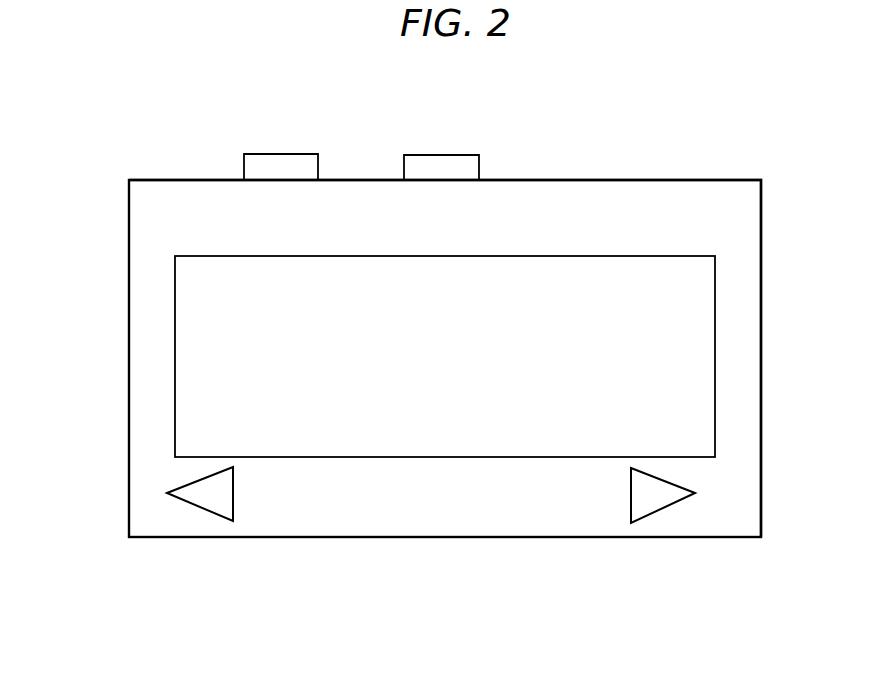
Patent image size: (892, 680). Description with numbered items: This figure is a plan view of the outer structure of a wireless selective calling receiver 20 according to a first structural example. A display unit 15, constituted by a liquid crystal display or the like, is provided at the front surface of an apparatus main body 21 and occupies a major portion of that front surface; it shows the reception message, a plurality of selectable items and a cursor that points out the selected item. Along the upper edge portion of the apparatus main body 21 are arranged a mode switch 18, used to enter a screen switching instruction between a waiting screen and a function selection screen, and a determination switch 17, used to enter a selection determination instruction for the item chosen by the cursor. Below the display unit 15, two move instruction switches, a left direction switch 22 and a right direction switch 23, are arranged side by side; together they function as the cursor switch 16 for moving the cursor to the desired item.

The display unit 15 is at (175, 357).
The cursor switch 16 is at (360, 601).
The determination switch 17 is at (441, 154).
The mode switch 18 is at (284, 153).
The wireless selective calling receiver 20 is at (645, 150).
The apparatus main body 21 is at (703, 203).
The left direction switch 22 is at (223, 494).
The right direction switch 23 is at (637, 494).